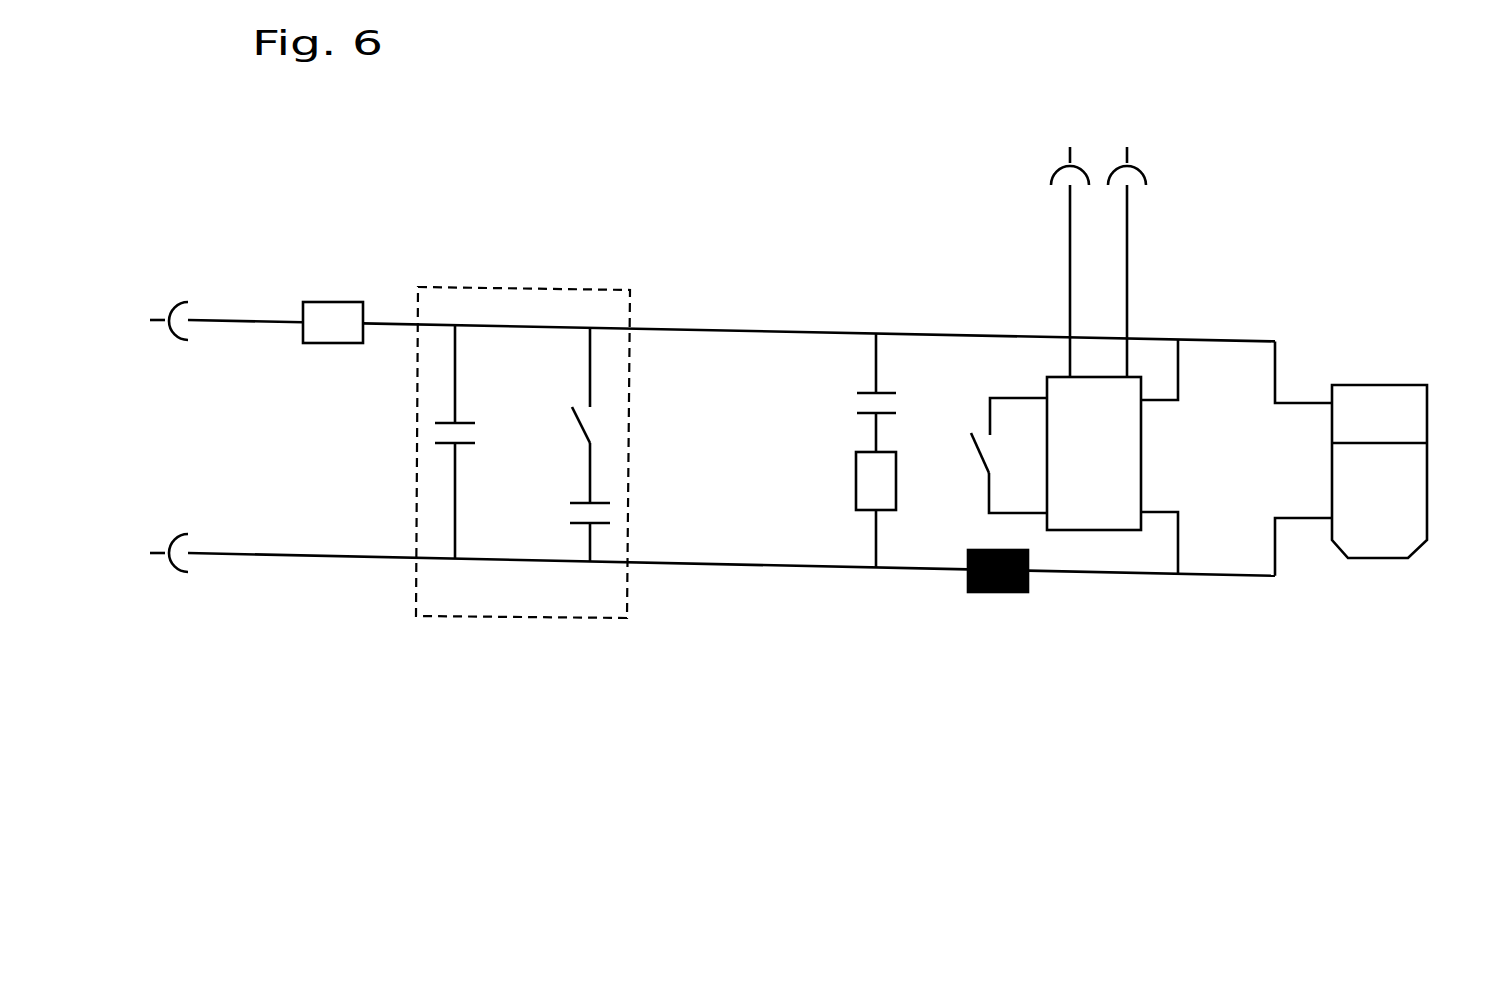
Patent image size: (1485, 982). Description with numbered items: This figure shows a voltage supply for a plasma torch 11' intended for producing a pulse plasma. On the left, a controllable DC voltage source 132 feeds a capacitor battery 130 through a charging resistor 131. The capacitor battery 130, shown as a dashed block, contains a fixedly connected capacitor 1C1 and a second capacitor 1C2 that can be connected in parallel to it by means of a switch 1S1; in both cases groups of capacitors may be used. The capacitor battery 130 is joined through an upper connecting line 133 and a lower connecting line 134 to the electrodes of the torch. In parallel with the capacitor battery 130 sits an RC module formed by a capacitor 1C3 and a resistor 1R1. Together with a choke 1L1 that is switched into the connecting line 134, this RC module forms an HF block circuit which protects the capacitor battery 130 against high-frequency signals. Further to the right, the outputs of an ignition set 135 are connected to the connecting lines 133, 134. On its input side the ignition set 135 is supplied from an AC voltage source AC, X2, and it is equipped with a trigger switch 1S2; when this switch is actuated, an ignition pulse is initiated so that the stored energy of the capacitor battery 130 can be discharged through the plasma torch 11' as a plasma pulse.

The capacitor battery 130 is at (573, 287).
The charging resistor 131 is at (325, 285).
The controllable DC voltage source 132 is at (167, 437).
The connecting line 133 is at (727, 330).
The connecting line 134 is at (742, 567).
The ignition set 135 is at (1102, 434).
The capacitor 1C1 is at (435, 462).
The capacitor 1C2 is at (572, 542).
The capacitor 1C3 is at (838, 412).
The resistor 1R1 is at (838, 488).
The switch 1S1 is at (590, 427).
The trigger switch 1S2 is at (971, 415).
The choke 1L1 is at (1005, 610).
The AC voltage source AC is at (1061, 228).
The AC voltage source connection X2 is at (1143, 228).
The plasma torch 11' is at (1375, 511).